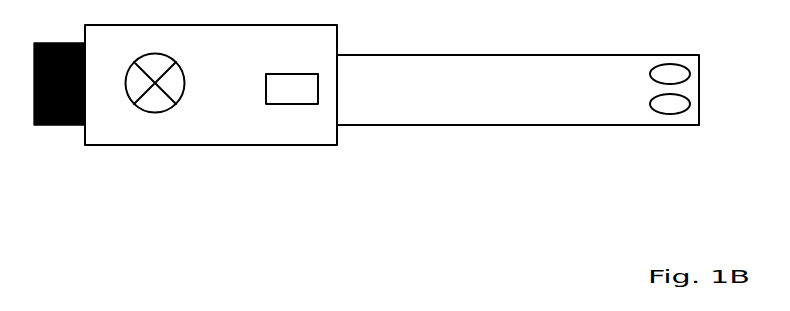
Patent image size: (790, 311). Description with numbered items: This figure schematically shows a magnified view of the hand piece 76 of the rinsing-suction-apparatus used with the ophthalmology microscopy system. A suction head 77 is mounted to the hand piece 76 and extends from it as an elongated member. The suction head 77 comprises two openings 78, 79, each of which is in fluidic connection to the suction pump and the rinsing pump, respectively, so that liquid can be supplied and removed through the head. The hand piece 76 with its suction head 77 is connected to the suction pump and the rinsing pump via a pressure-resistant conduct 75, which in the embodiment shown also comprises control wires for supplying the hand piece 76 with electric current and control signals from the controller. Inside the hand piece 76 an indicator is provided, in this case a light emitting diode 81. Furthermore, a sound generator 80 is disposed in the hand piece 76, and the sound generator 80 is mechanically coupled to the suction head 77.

The pressure-resistant conduct 75 is at (48, 126).
The hand piece 76 is at (225, 145).
The suction head 77 is at (400, 126).
The opening 78 is at (671, 64).
The opening 79 is at (669, 114).
The sound generator 80 is at (296, 104).
The light emitting diode 81 is at (157, 113).